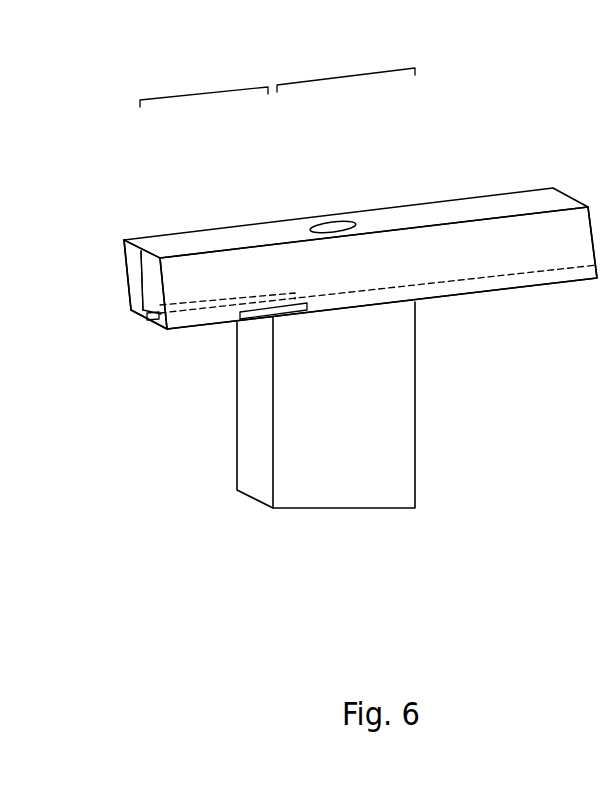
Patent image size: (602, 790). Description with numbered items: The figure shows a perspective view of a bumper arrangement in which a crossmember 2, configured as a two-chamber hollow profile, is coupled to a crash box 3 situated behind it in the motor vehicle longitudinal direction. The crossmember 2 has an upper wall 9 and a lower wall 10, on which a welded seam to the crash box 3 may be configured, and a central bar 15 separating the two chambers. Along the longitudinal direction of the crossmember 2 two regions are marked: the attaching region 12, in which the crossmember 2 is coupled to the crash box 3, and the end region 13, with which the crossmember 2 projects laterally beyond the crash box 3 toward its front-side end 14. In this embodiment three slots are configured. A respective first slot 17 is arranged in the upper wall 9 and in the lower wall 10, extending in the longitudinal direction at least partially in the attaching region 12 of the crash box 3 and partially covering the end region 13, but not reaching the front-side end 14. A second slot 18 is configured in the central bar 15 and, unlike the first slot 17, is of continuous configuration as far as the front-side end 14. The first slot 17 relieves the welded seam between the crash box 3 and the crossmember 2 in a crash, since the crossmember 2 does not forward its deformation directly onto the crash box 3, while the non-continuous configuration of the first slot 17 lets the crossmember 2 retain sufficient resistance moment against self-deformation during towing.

The crossmember 2 is at (193, 240).
The crash box 3 is at (383, 445).
The upper wall 9 is at (222, 268).
The lower wall 10 is at (131, 267).
The attaching region 12 is at (338, 75).
The end region 13 is at (198, 93).
The front-side end 14 is at (130, 305).
The central bar 15 is at (152, 267).
The first slot 17 is at (216, 308).
The second slot 18 is at (151, 322).